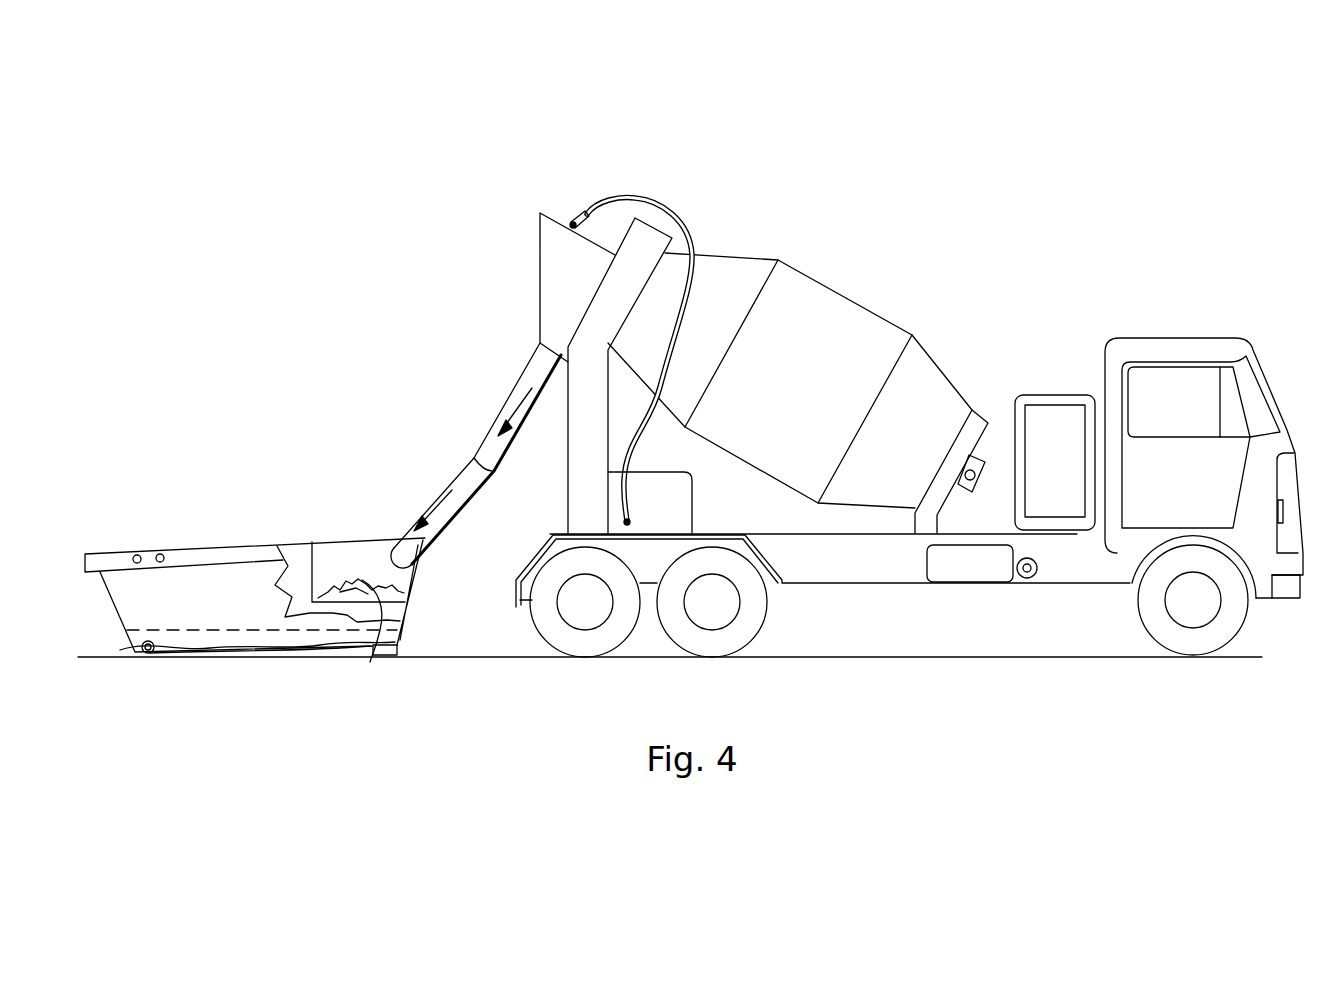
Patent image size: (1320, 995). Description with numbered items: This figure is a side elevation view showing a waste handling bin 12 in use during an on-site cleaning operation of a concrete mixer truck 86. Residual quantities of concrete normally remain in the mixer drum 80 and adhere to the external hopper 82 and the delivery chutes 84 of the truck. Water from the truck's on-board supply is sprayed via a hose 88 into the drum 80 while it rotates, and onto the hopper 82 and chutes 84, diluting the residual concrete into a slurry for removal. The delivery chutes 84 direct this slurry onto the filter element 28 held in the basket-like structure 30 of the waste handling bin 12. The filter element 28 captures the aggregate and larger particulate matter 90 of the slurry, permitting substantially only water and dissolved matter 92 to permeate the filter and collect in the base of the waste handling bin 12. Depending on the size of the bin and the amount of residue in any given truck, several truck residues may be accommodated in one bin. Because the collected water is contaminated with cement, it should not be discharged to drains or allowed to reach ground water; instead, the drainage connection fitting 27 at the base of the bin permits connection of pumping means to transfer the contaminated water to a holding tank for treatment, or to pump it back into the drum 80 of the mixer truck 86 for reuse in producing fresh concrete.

The waste handling bin 12 is at (241, 539).
The drainage connection fitting 27 is at (150, 654).
The filter element 28 is at (395, 585).
The basket-like structure 30 is at (359, 539).
The mixer drum 80 is at (870, 310).
The hopper 82 is at (560, 262).
The delivery chutes 84 is at (459, 430).
The concrete mixer truck 86 is at (885, 362).
The hose 88 is at (694, 278).
The aggregate and larger particulate matter 90 is at (370, 662).
The water and dissolved matter 92 is at (250, 640).